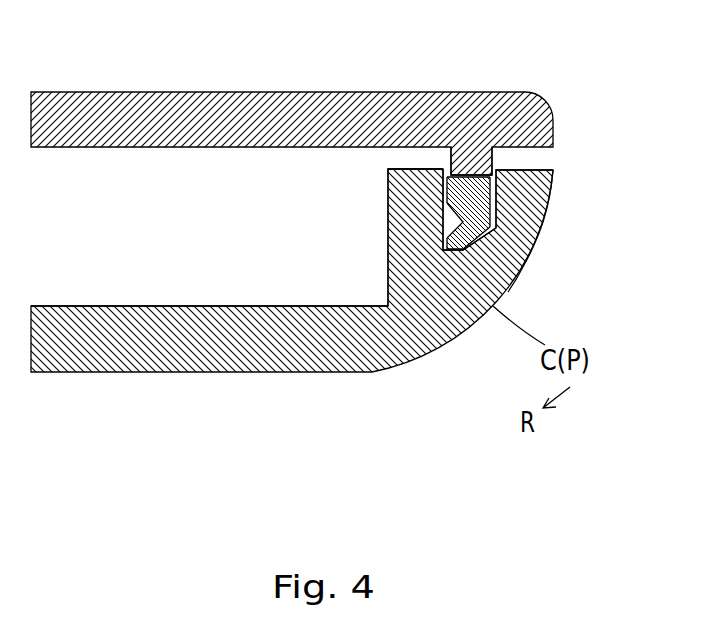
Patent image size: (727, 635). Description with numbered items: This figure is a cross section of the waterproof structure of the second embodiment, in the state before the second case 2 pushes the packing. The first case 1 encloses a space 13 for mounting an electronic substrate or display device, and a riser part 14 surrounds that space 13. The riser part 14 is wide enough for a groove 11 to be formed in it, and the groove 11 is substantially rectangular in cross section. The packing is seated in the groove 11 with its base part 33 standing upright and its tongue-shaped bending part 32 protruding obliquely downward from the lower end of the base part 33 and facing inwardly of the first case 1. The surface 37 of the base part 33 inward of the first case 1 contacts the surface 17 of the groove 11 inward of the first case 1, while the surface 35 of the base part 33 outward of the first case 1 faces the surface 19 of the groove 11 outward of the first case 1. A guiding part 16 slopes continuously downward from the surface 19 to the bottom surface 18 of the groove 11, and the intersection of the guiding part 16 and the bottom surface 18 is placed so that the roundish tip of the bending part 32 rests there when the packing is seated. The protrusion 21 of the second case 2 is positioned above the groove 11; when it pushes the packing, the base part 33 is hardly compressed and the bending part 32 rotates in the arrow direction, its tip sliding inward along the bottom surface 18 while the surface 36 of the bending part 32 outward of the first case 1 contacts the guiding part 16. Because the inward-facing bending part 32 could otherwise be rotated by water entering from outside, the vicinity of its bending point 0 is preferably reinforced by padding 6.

The first case 1 is at (112, 375).
The second case 2 is at (118, 90).
The space 13 is at (85, 254).
The surface of the groove inward of the first case 17 is at (388, 196).
The surface of the base part inward of the first case 37 is at (400, 181).
The protrusion 21 is at (494, 168).
The base part 33 is at (484, 178).
The surface of the base part outward of the first case 35 is at (490, 186).
The bending point 0 is at (460, 221).
The padding 6 is at (445, 200).
The bending part 32 is at (443, 250).
The bottom surface of the groove 18 is at (447, 250).
The groove 11 is at (522, 193).
The surface of the groove outward of the first case 19 is at (549, 207).
The riser part 14 is at (544, 227).
The surface of the bending part outward of the first case 36 is at (534, 248).
The guiding part 16 is at (522, 269).